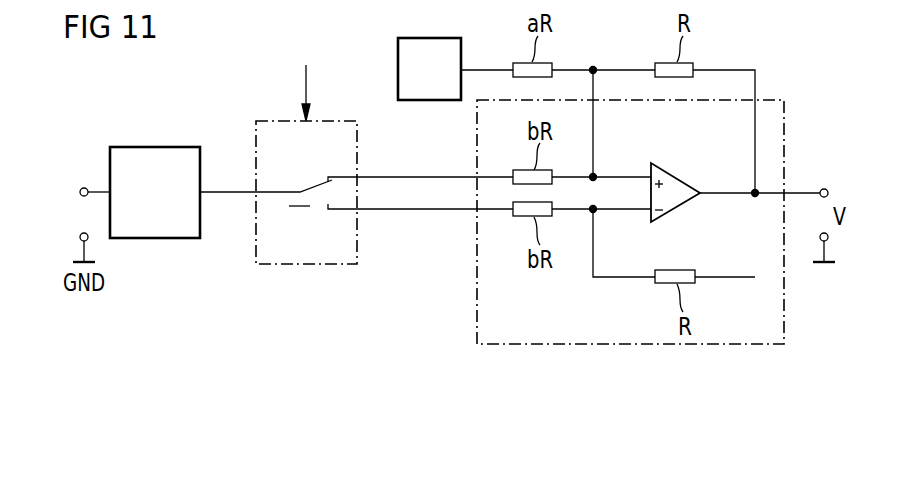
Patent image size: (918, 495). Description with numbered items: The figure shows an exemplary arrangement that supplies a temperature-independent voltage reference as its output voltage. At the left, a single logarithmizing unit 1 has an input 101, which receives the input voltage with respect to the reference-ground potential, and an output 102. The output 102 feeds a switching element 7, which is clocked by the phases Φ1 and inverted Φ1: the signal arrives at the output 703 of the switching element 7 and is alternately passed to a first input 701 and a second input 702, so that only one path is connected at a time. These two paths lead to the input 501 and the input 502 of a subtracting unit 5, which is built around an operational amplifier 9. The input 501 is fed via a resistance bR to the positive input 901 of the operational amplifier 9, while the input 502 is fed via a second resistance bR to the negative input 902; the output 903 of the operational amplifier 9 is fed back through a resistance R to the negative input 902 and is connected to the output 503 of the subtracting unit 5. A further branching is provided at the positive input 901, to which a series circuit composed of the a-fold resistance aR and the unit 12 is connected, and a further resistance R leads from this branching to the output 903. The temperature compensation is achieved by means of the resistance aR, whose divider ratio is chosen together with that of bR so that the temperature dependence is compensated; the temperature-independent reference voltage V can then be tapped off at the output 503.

The logarithmizing unit 1 is at (155, 240).
The input 101 is at (108, 188).
The output 102 is at (200, 196).
The output of the switching element 703 is at (247, 190).
The first input of the switching element 701 is at (358, 176).
The second input of the switching element 702 is at (358, 212).
The switching element 7 is at (318, 266).
The unit 12 is at (398, 70).
The input of the subtracting unit 501 is at (477, 175).
The input of the subtracting unit 502 is at (477, 210).
The subtracting unit 5 is at (477, 316).
The positive input of the operational amplifier 901 is at (622, 176).
The negative input of the operational amplifier 902 is at (622, 212).
The output of the operational amplifier 903 is at (708, 190).
The operational amplifier 9 is at (676, 210).
The output of the subtracting unit 503 is at (792, 193).